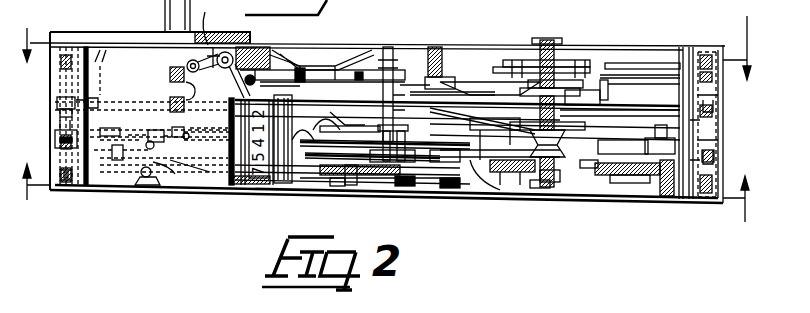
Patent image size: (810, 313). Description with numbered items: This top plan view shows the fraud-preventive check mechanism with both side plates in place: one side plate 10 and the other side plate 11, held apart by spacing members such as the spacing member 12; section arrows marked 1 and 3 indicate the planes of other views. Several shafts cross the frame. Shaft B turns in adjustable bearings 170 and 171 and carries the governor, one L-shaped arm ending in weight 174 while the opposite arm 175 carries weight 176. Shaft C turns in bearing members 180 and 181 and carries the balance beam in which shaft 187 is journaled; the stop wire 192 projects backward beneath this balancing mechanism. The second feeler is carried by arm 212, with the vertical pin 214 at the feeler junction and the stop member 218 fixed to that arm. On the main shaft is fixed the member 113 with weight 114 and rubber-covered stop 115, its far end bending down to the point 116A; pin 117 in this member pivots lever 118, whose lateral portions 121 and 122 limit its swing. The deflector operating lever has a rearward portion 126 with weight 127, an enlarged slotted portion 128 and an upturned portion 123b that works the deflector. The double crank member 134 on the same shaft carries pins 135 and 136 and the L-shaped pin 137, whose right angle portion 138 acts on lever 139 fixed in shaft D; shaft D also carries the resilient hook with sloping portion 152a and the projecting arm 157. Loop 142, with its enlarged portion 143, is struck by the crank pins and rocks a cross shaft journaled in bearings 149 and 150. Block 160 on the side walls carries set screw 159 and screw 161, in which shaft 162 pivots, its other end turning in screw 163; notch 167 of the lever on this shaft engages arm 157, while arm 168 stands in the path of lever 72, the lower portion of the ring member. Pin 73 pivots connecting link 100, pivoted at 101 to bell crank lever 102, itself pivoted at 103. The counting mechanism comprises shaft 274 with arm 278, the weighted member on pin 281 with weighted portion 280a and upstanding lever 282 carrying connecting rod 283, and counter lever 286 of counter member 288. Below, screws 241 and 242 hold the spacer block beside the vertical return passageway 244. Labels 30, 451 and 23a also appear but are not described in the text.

The side plate 10 is at (112, 192).
The side plate 11 is at (100, 42).
The spacing member 12 is at (735, 139).
The platform 30 is at (150, 19).
The lower portion of ring shaped member 72 is at (168, 79).
The pin 73 is at (168, 110).
The connecting link 100 is at (232, 104).
The pivot connection 101 is at (186, 60).
The bell crank lever 102 is at (215, 118).
The pivot mounting 103 is at (262, 48).
The member 113 is at (535, 189).
The weight 114 is at (648, 182).
The stop 115 is at (582, 170).
The guide 116A is at (80, 70).
The pin 117 is at (438, 120).
The lever 118 is at (403, 134).
The laterally projecting portion 121 is at (372, 139).
The laterally projecting portion 122 is at (385, 148).
The upwardly projecting portion 123b is at (345, 119).
The rearwardly projecting portion 126 is at (555, 125).
The weight 127 is at (623, 146).
The enlarged portion 128 is at (501, 135).
The double crank member 134 is at (616, 100).
The pin 135 is at (508, 66).
The pin 136 is at (588, 60).
The L-shaped pin 137 is at (530, 88).
The right angle portion 138 is at (612, 86).
The lever 139 is at (628, 76).
The loop 142 is at (558, 50).
The enlarged portion of loop 143 is at (522, 58).
The bearing 149 is at (48, 140).
The bearing 150 is at (726, 157).
The sloping portion 152a is at (505, 171).
The projecting arm 157 is at (660, 139).
The set screw 159 is at (740, 113).
The block 160 is at (748, 48).
The screw 161 is at (738, 126).
The shaft 162 is at (135, 102).
The screw 163 is at (57, 104).
The notch 167 is at (616, 182).
The upwardly projecting arm 168 is at (168, 69).
The adjustable bearing 170 is at (445, 196).
The adjustable bearing 171 is at (460, 50).
The weight 174 is at (268, 59).
The arm 175 is at (478, 104).
The weight 176 is at (582, 97).
The bearing member 180 is at (312, 198).
The bearing member 181 is at (342, 48).
The shaft 187 is at (180, 191).
The stop wire 192 is at (463, 191).
The arm 212 is at (500, 148).
The vertically disposed pin 214 is at (145, 132).
The stop member 218 is at (301, 139).
The arm 23a is at (520, 103).
The screw 241 is at (145, 186).
The screw 242 is at (350, 191).
The vertically disposed passageway 244 is at (82, 196).
The shaft 274 is at (395, 85).
The arm 278 is at (433, 46).
The weighted portion 280a is at (520, 196).
The pin 281 is at (392, 191).
The lever 282 is at (398, 189).
The connecting rod 283 is at (374, 40).
The counter lever 286 is at (282, 78).
The counter member 288 is at (270, 197).
The block 451 is at (112, 162).
The section line 1- 1 is at (389, 182).
The section line 3- 3 is at (385, 59).
The shaft B is at (448, 78).
The shaft C is at (330, 118).
The shaft D is at (678, 58).